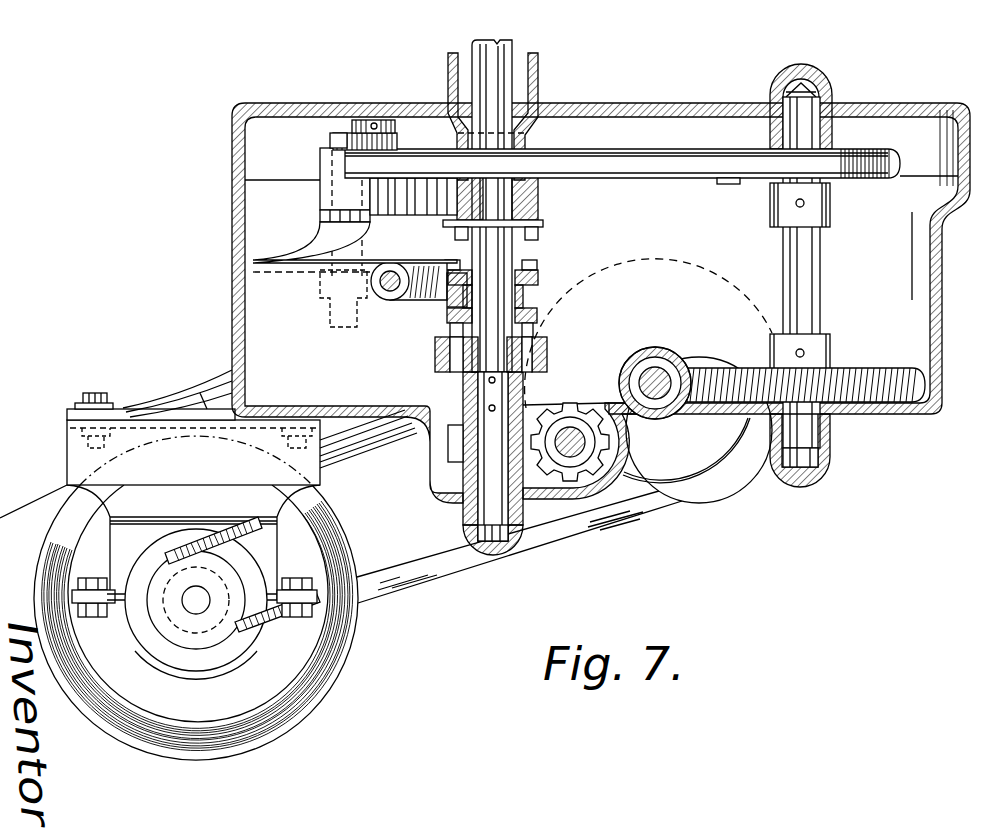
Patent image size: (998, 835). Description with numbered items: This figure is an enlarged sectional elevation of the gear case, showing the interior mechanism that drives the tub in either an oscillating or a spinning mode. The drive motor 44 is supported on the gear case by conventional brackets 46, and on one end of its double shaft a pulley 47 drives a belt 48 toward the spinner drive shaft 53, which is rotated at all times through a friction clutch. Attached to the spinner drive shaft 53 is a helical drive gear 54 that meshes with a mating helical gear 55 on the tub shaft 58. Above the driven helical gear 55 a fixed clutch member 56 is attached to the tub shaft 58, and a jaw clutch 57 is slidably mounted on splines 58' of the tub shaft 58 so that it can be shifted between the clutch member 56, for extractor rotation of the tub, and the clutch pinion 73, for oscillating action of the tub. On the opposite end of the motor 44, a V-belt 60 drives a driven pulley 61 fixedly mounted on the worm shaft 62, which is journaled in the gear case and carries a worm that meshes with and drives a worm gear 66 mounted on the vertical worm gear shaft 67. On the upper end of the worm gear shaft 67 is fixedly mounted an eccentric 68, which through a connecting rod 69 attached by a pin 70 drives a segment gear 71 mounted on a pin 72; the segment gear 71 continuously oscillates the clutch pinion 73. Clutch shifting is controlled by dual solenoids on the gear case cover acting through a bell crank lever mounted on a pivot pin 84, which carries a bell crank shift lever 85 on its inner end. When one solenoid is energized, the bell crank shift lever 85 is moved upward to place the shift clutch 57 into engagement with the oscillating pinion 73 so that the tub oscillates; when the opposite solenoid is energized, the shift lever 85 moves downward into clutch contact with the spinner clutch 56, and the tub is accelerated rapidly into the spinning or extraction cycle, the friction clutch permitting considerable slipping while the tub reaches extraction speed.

The drive motor 44 is at (313, 692).
The brackets 46 is at (80, 463).
The pulley 47 is at (197, 642).
The belt 48 is at (275, 610).
The spinner drive shaft 53 is at (575, 450).
The helical drive gear 54 is at (573, 408).
The helical gear 55 is at (453, 452).
The fixed clutch member 56 is at (548, 348).
The jaw clutch 57 is at (540, 278).
The tub shaft 58 is at (532, 290).
The splines 58' is at (527, 229).
The V-belt 60 is at (580, 530).
The driven pulley 61 is at (718, 487).
The worm shaft 62 is at (667, 370).
The worm gear 66 is at (848, 365).
The worm gear shaft 67 is at (818, 292).
The eccentric 68 is at (828, 200).
The connecting rod 69 is at (647, 140).
The pin 70 is at (362, 121).
The segment gear 71 is at (347, 190).
The pin 72 is at (333, 138).
The clutch pinion 73 is at (540, 203).
The pivot pin 84 is at (390, 295).
The bell crank shift lever 85 is at (425, 305).